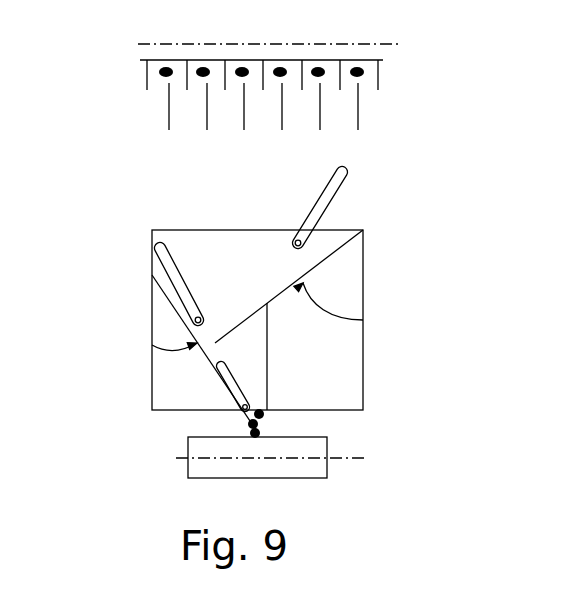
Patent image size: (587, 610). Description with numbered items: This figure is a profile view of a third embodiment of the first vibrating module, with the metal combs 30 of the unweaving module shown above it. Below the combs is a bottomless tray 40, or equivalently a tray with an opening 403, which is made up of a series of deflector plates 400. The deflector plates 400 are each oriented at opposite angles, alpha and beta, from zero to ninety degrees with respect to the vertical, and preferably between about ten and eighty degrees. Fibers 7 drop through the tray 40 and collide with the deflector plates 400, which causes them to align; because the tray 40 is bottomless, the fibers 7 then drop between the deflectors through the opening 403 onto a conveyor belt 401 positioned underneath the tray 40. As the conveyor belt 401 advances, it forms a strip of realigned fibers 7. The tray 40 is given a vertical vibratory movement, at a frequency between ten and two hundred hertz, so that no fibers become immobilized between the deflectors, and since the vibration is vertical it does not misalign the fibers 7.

The metal combs 30 is at (381, 77).
The fibers 7 is at (332, 202).
The tray 40 is at (152, 327).
The deflector plates 400 is at (222, 381).
The conveyor belt 401 is at (308, 445).
The opening 403 is at (263, 417).